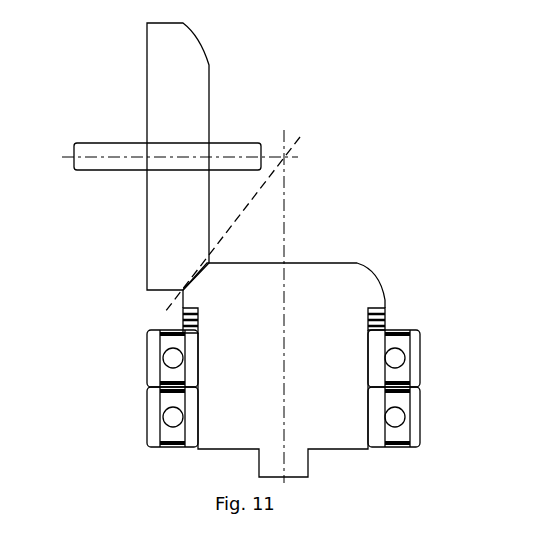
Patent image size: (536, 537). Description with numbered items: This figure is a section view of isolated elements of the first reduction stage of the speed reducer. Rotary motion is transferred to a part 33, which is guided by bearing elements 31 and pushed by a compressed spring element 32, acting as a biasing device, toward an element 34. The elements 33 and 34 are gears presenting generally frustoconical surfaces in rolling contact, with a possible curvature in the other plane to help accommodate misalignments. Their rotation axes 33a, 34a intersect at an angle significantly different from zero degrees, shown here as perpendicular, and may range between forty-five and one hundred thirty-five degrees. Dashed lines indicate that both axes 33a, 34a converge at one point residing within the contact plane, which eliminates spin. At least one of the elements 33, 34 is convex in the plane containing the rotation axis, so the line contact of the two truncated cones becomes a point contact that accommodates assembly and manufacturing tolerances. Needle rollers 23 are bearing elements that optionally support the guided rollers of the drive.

The needle rollers 23 is at (92, 138).
The bearing elements 31 is at (153, 403).
The compressed spring element 32 is at (388, 313).
The gear 33 is at (350, 273).
The rotation axis of element 33 33a is at (267, 123).
The gear 34 is at (159, 47).
The rotation axis of element 34 34a is at (298, 157).